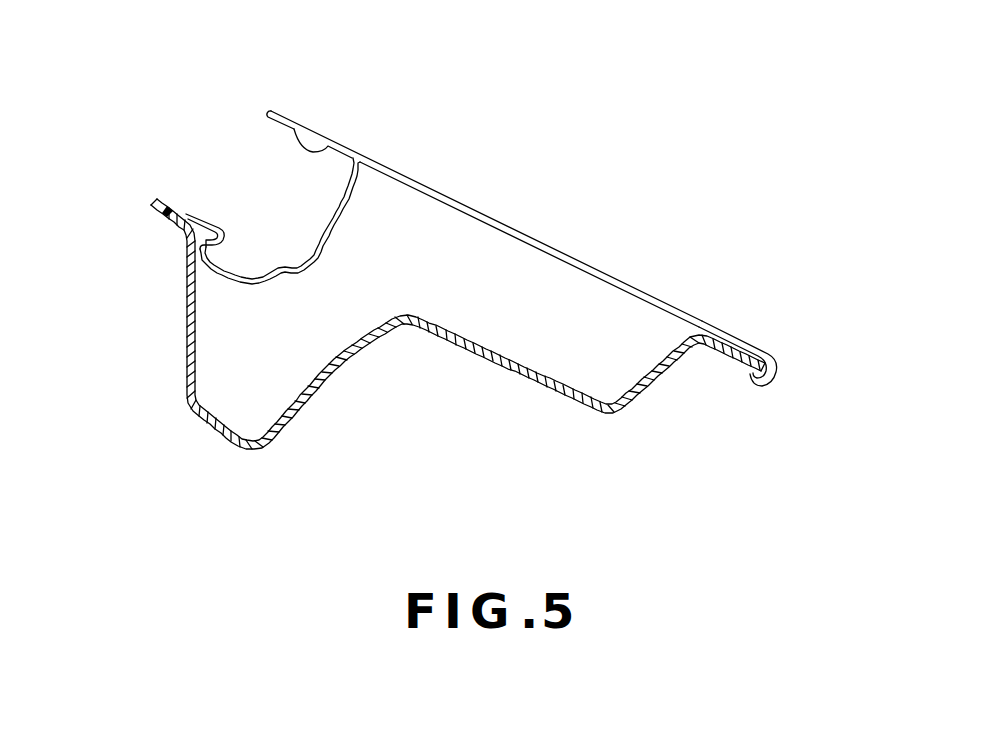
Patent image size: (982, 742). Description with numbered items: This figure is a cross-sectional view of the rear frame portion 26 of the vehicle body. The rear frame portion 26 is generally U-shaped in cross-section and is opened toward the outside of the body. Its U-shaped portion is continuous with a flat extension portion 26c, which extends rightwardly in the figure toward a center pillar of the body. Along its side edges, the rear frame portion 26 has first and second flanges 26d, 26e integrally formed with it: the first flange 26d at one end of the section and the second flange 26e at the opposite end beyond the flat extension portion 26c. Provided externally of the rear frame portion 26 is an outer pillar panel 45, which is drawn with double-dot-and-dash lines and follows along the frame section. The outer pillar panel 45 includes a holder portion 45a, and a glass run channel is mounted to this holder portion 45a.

The rear frame portion 26 is at (185, 410).
The flat extension portion 26c is at (527, 378).
The first flange 26d is at (150, 212).
The second flange 26e is at (704, 345).
The outer pillar panel 45 is at (521, 233).
The holder portion 45a is at (327, 232).